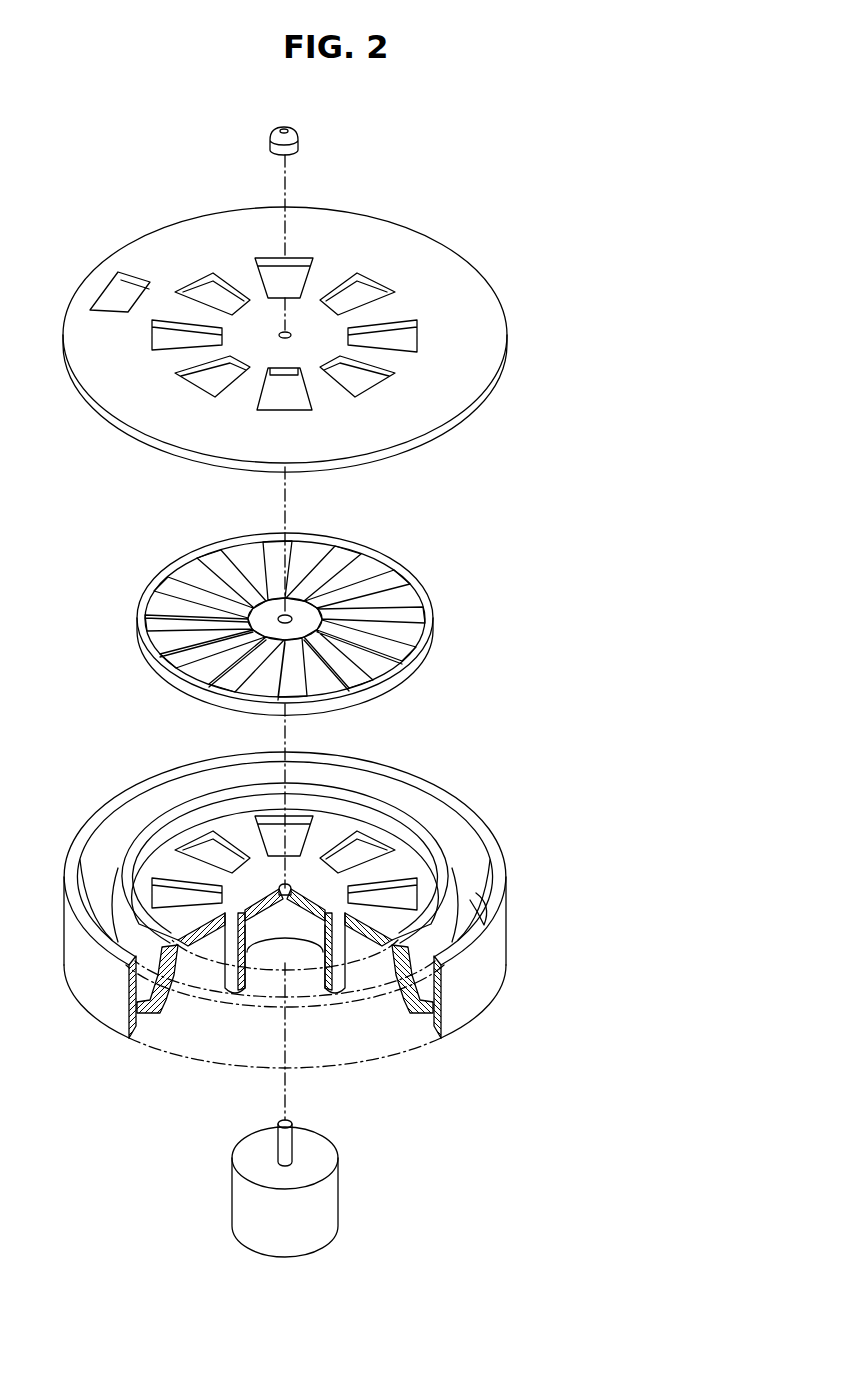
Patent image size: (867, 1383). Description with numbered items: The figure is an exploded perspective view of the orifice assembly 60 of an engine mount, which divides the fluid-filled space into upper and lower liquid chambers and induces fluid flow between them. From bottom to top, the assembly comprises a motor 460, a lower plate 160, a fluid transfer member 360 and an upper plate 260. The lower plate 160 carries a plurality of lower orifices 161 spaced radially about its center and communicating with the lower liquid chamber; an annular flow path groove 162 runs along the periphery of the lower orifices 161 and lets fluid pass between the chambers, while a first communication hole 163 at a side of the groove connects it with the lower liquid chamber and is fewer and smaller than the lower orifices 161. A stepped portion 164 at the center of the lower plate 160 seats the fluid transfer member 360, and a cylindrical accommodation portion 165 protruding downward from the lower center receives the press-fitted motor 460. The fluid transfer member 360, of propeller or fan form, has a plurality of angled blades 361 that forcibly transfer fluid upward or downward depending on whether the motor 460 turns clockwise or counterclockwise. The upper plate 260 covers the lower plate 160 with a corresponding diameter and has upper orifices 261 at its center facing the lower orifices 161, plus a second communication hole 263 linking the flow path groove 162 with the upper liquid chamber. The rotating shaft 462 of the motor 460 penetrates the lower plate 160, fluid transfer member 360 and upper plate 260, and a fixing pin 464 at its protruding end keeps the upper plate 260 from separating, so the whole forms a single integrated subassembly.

The orifice assembly 60 is at (582, 554).
The lower plate 160 is at (321, 903).
The lower orifice 161 is at (362, 850).
The flow path groove 162 is at (112, 865).
The first communication hole 163 is at (483, 910).
The stepped portion 164 is at (417, 828).
The accommodation portion 165 is at (227, 988).
The upper plate 260 is at (285, 339).
The upper orifice 261 is at (363, 290).
The second communication hole 263 is at (118, 298).
The fluid transfer member 360 is at (317, 605).
The blades 361 is at (328, 565).
The motor 460 is at (321, 1188).
The rotating shaft 462 is at (291, 1140).
The fixing pin 464 is at (293, 130).